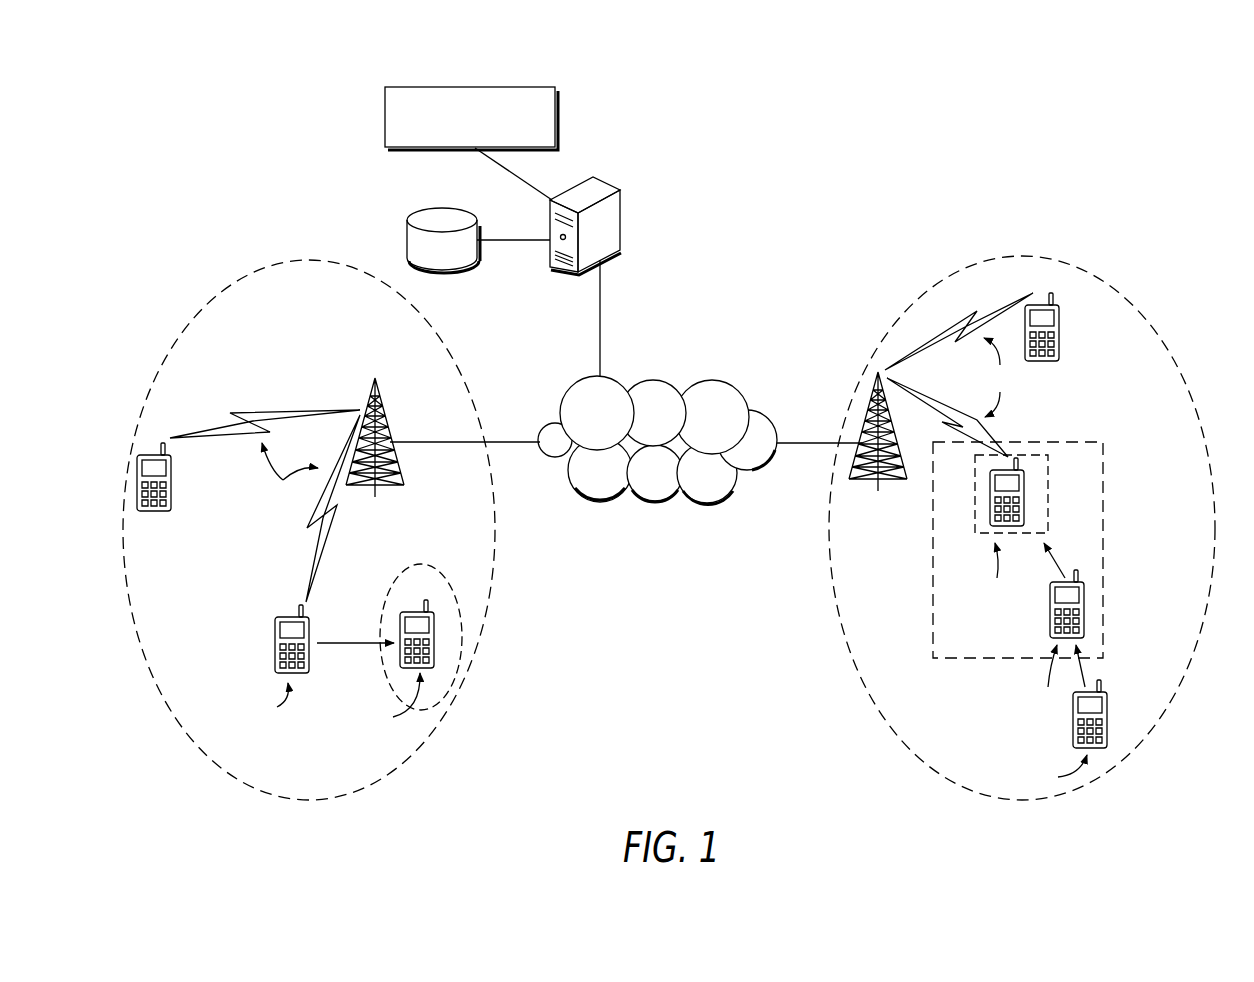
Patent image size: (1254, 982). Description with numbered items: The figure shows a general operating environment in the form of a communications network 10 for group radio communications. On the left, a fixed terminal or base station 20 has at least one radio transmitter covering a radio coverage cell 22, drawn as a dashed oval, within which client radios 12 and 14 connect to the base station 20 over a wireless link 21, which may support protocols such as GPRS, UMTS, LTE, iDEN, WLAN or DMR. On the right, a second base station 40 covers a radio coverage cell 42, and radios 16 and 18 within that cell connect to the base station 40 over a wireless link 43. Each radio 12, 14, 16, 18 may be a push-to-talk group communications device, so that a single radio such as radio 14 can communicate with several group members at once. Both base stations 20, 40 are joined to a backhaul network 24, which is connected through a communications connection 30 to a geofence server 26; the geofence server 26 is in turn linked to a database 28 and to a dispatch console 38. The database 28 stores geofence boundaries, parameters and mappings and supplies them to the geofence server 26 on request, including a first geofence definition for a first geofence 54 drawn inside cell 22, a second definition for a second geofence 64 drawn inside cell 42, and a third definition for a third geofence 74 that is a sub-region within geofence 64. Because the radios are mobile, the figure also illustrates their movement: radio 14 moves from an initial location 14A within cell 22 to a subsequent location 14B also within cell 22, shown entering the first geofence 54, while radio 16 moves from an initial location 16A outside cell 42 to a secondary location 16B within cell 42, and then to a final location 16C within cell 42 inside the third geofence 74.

The communications network 10 is at (176, 78).
The client radio 12 is at (172, 480).
The client radio 14 is at (295, 613).
The initial location 14A is at (263, 702).
The subsequent location 14B is at (387, 702).
The client radio 16 is at (1022, 493).
The initial location 16A is at (1053, 772).
The secondary location 16B is at (1057, 677).
The final location 16C is at (1019, 574).
The client radio 18 is at (1058, 328).
The fixed terminal 20 is at (383, 408).
The wireless link 21 is at (265, 506).
The radio coverage cell 22 is at (208, 303).
The backhaul network 24 is at (778, 450).
The geofence server 26 is at (621, 215).
The database 28 is at (437, 206).
The communications connection 30 is at (600, 318).
The dispatch console 38 is at (557, 120).
The fixed terminal 40 is at (875, 393).
The radio coverage cell 42 is at (1112, 292).
The wireless link 43 is at (959, 375).
The first geofence 54 is at (418, 567).
The second geofence 64 is at (1068, 442).
The third geofence 74 is at (1050, 515).